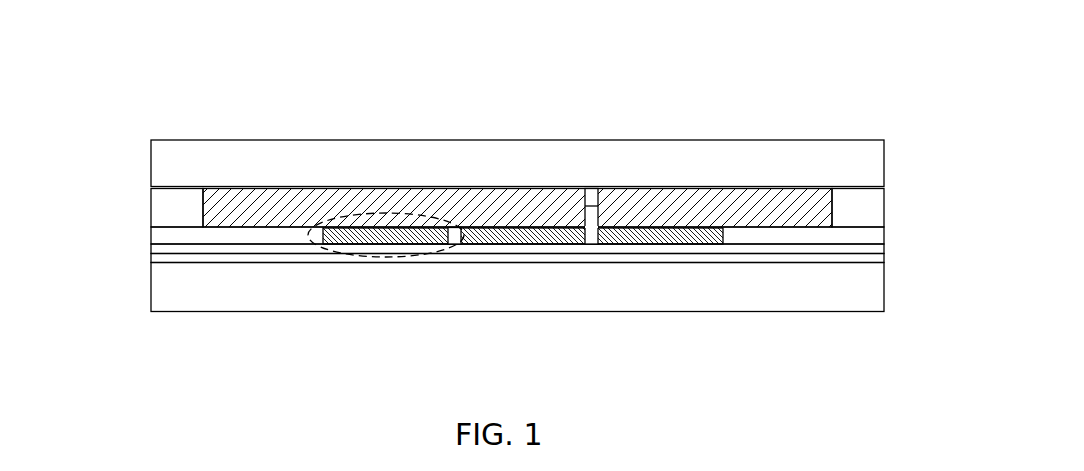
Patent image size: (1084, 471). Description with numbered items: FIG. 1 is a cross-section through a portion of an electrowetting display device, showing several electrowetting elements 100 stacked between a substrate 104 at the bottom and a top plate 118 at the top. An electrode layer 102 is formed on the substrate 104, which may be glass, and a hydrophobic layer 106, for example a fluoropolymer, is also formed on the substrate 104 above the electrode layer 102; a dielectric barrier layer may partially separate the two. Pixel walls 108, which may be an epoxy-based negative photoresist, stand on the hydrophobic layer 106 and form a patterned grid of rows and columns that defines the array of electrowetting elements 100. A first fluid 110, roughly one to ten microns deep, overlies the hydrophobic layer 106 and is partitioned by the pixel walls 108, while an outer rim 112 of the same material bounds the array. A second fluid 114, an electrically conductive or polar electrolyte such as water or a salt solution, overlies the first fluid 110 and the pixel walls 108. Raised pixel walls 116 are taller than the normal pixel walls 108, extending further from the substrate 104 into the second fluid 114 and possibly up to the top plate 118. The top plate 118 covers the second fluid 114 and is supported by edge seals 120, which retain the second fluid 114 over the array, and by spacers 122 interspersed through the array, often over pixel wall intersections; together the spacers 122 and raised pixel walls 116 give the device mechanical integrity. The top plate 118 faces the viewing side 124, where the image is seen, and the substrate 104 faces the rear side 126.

The electrowetting element 100 is at (417, 256).
The electrode layer 102 is at (151, 258).
The substrate 104 is at (231, 297).
The hydrophobic layer 106 is at (151, 248).
The pixel walls 108 is at (452, 245).
The first fluid 110 is at (645, 245).
The outer rim 112 is at (151, 237).
The second fluid 114 is at (737, 188).
The raised pixel walls 116 is at (592, 245).
The top plate 118 is at (231, 172).
The edge seals 120 is at (884, 207).
The spacers 122 is at (590, 187).
The viewing side 124 is at (630, 52).
The rear side 126 is at (282, 351).